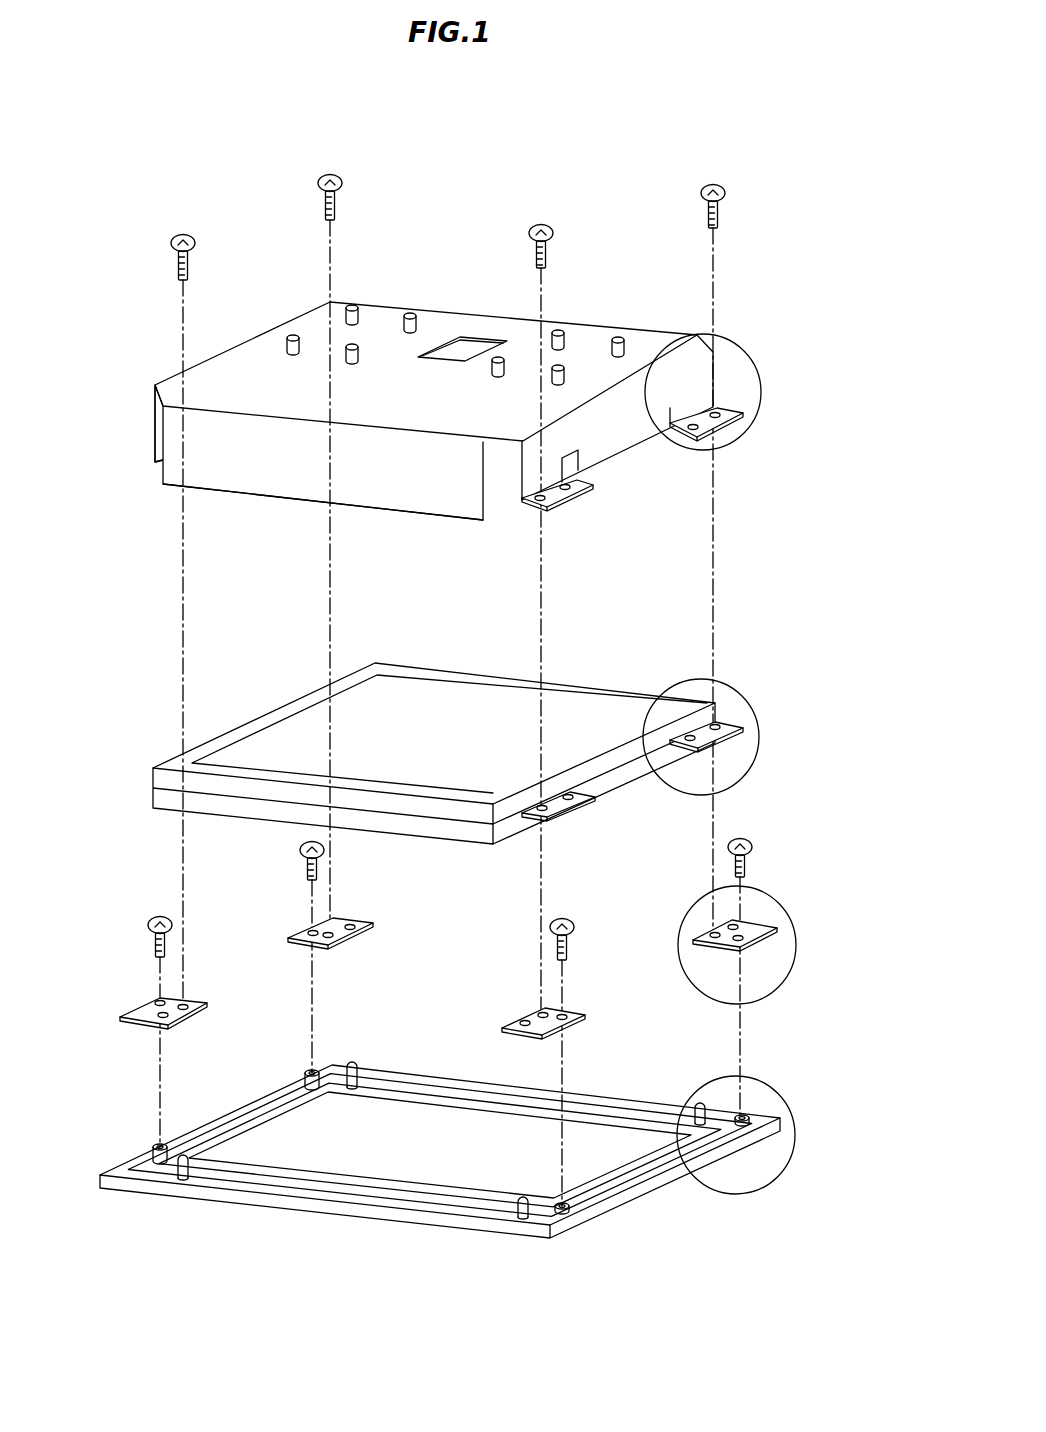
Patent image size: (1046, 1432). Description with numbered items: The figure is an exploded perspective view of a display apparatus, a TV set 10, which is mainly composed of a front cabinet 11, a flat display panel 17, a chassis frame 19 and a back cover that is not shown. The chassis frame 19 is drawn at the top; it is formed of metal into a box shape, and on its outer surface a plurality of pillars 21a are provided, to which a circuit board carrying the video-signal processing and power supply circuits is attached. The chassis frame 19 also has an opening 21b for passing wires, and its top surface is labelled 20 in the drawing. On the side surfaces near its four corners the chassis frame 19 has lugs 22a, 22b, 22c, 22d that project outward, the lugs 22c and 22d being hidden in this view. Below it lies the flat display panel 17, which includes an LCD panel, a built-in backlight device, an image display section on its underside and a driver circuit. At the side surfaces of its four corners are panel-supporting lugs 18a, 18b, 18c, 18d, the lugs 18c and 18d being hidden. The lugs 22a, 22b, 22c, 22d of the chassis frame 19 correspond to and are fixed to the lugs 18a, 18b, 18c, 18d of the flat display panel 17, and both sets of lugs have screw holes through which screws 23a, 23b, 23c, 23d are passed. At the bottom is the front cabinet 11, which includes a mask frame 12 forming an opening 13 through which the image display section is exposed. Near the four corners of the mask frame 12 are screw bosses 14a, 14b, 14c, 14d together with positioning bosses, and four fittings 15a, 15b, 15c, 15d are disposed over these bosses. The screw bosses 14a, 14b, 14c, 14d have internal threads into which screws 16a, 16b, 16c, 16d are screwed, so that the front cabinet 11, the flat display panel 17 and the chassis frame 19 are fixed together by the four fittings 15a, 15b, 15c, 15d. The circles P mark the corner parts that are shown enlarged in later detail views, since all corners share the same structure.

The TV set 10 is at (780, 576).
The front cabinet 11 is at (376, 1222).
The mask frame 12 is at (244, 1195).
The opening 13 is at (608, 1165).
The screw boss 14a is at (566, 1222).
The screw boss 14b is at (752, 1114).
The screw boss 14c is at (306, 1070).
The screw boss 14d is at (152, 1146).
The fitting 15a is at (582, 1015).
The fitting 15b is at (760, 926).
The fitting 15c is at (372, 930).
The fitting 15d is at (132, 1023).
The screw 16a is at (570, 940).
The screw 16b is at (748, 858).
The screw 16c is at (302, 860).
The screw 16d is at (148, 930).
The flat display panel 17 is at (595, 684).
The lug 18a is at (586, 800).
The lug 18b is at (726, 732).
The lug 18c is at (344, 668).
The lug 18d is at (180, 765).
The chassis frame 19 is at (428, 297).
The top plate 20 is at (582, 328).
The pillar 21a is at (353, 304).
The opening 21b is at (462, 340).
The lug 22a is at (586, 492).
The lug 22b is at (735, 430).
The lug 22c is at (302, 300).
The lug 22d is at (156, 432).
The screw 23a is at (546, 224).
The screw 23b is at (717, 184).
The screw 23c is at (329, 174).
The screw 23d is at (184, 234).
The circle P is at (745, 348).